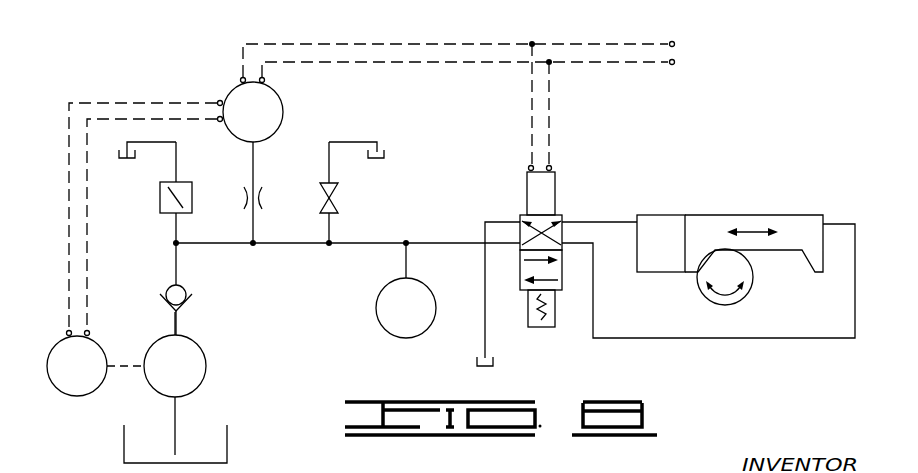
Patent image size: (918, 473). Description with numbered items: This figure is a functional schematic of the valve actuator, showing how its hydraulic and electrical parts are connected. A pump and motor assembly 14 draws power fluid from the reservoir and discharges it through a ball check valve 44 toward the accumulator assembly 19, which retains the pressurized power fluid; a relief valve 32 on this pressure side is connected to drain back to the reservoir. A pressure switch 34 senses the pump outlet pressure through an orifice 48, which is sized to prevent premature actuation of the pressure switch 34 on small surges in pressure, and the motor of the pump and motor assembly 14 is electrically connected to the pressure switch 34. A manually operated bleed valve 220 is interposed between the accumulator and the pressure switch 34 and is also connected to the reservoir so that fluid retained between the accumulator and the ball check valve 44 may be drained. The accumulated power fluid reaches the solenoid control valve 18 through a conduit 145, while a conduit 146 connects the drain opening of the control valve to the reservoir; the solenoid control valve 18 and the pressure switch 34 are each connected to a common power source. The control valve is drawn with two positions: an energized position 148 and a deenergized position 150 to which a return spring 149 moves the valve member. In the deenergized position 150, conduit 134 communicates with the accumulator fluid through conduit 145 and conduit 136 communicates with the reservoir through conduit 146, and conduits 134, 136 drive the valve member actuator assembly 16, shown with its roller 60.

The pump and motor assembly 14 is at (114, 406).
The valve member actuator assembly 16 is at (720, 202).
The solenoid control valve 18 is at (567, 180).
The accumulator assembly 19 is at (380, 339).
The relief valve 32 is at (188, 177).
The pressure switch 34 is at (291, 102).
The ball check valve 44 is at (187, 296).
The orifice 48 is at (263, 197).
The roller 60 is at (748, 270).
The conduit 134 is at (626, 220).
The conduit 136 is at (639, 340).
The conduit 145 is at (429, 246).
The conduit 146 is at (497, 220).
The energized position 148 is at (568, 267).
The return spring 149 is at (545, 314).
The deenergized position 150 is at (568, 234).
The bleed valve 220 is at (340, 201).